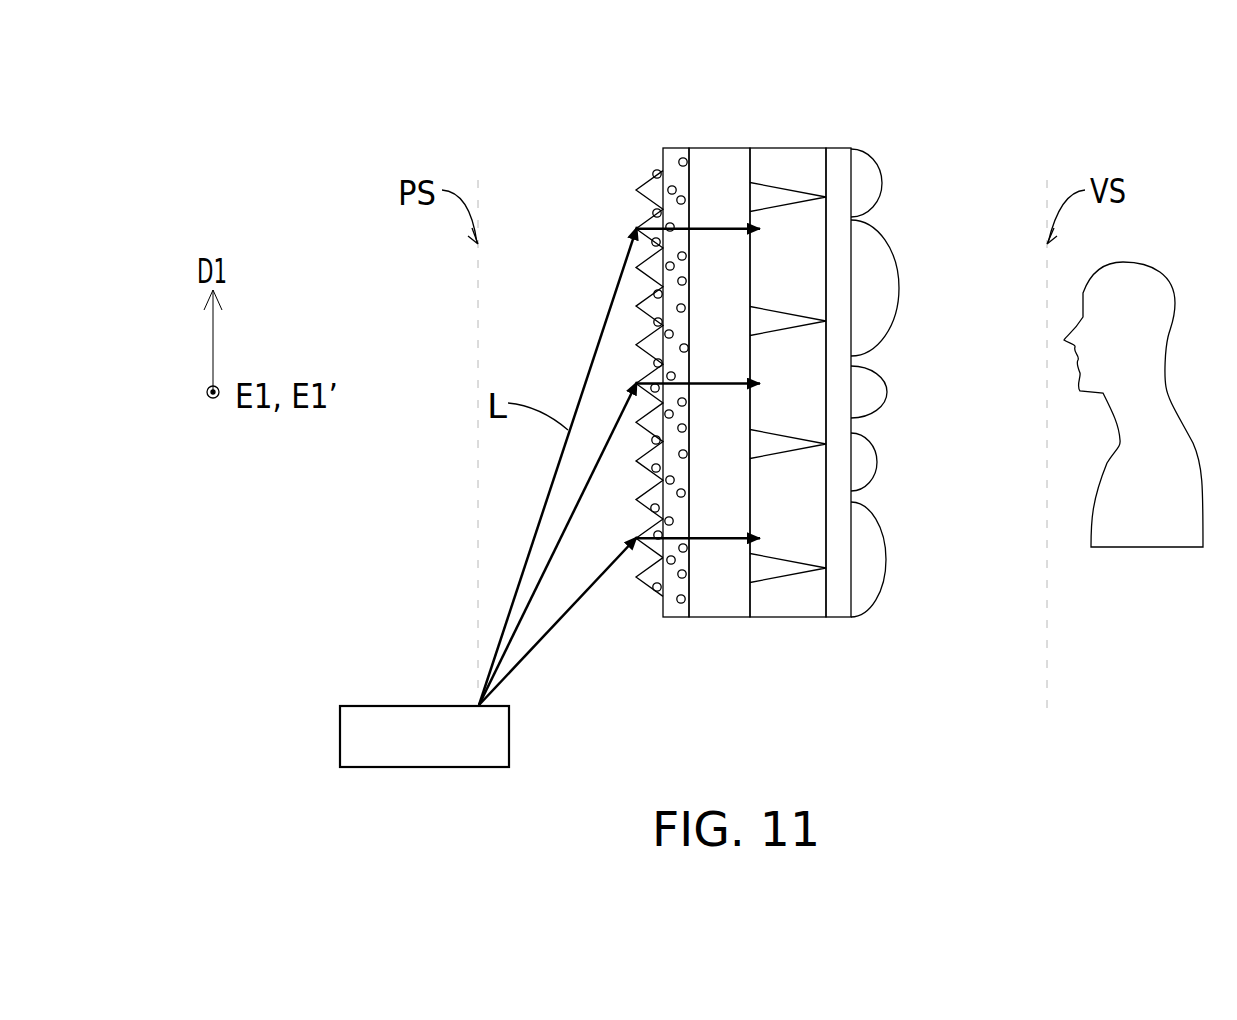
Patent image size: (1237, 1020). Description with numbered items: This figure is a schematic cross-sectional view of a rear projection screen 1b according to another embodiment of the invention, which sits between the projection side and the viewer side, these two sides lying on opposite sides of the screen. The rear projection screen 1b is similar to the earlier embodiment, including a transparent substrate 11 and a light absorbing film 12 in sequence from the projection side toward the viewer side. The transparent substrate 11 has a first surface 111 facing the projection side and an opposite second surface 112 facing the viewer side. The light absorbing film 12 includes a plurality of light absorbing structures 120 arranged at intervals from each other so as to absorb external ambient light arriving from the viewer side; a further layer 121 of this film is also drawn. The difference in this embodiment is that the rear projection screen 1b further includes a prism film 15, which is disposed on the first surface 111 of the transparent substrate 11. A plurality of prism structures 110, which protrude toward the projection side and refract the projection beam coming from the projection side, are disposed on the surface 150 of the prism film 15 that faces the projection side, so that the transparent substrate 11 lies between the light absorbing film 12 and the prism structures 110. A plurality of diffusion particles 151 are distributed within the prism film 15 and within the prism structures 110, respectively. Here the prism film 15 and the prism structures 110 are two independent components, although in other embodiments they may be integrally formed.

The rear projection screen 1b is at (933, 172).
The transparent substrate 11 is at (762, 80).
The first surface 111 is at (700, 178).
The second surface 112 is at (750, 178).
The prism structures 110 is at (637, 182).
The light absorbing film 12 is at (903, 80).
The light absorbing structures 120 is at (777, 187).
The substrate 121 is at (810, 177).
The prism film 15 is at (685, 597).
The surface 150 is at (675, 608).
The diffusion particles 151 is at (650, 592).